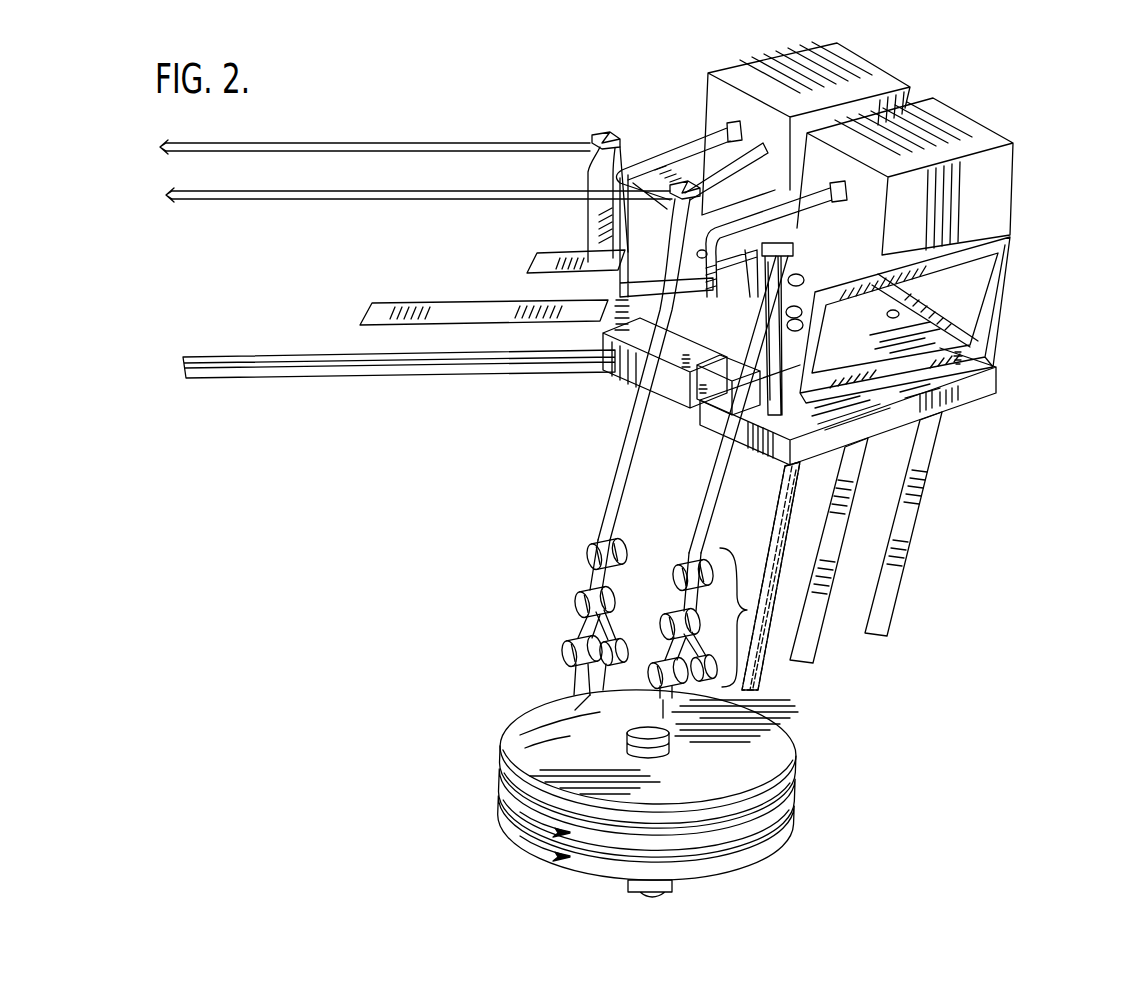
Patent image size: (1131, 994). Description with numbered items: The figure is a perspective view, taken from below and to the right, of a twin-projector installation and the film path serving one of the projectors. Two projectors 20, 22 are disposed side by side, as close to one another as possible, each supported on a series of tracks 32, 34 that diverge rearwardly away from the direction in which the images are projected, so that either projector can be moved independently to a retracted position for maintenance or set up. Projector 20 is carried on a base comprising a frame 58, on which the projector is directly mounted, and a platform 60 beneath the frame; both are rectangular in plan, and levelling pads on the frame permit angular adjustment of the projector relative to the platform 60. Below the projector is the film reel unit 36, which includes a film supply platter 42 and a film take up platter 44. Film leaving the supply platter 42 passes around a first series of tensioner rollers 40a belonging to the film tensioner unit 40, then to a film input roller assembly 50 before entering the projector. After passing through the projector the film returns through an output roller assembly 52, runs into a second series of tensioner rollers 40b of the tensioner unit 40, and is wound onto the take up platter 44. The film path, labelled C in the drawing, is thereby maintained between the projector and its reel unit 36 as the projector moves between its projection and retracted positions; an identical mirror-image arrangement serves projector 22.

The projector 20 is at (1014, 183).
The projector 22 is at (908, 73).
The tracks 32 is at (937, 470).
The tracks 34 is at (470, 380).
The film reel unit 36 is at (632, 791).
The film tensioner unit 40 is at (644, 448).
The first series of tensioner rollers 40a is at (739, 603).
The second series of tensioner rollers 40b is at (644, 580).
The film supply platter 42 is at (778, 748).
The film take up platter 44 is at (790, 828).
The film input roller assembly 50 is at (773, 381).
The output roller assembly 52 is at (640, 392).
The frame 58 is at (1019, 308).
The platform 60 is at (978, 391).
The chain C is at (778, 478).